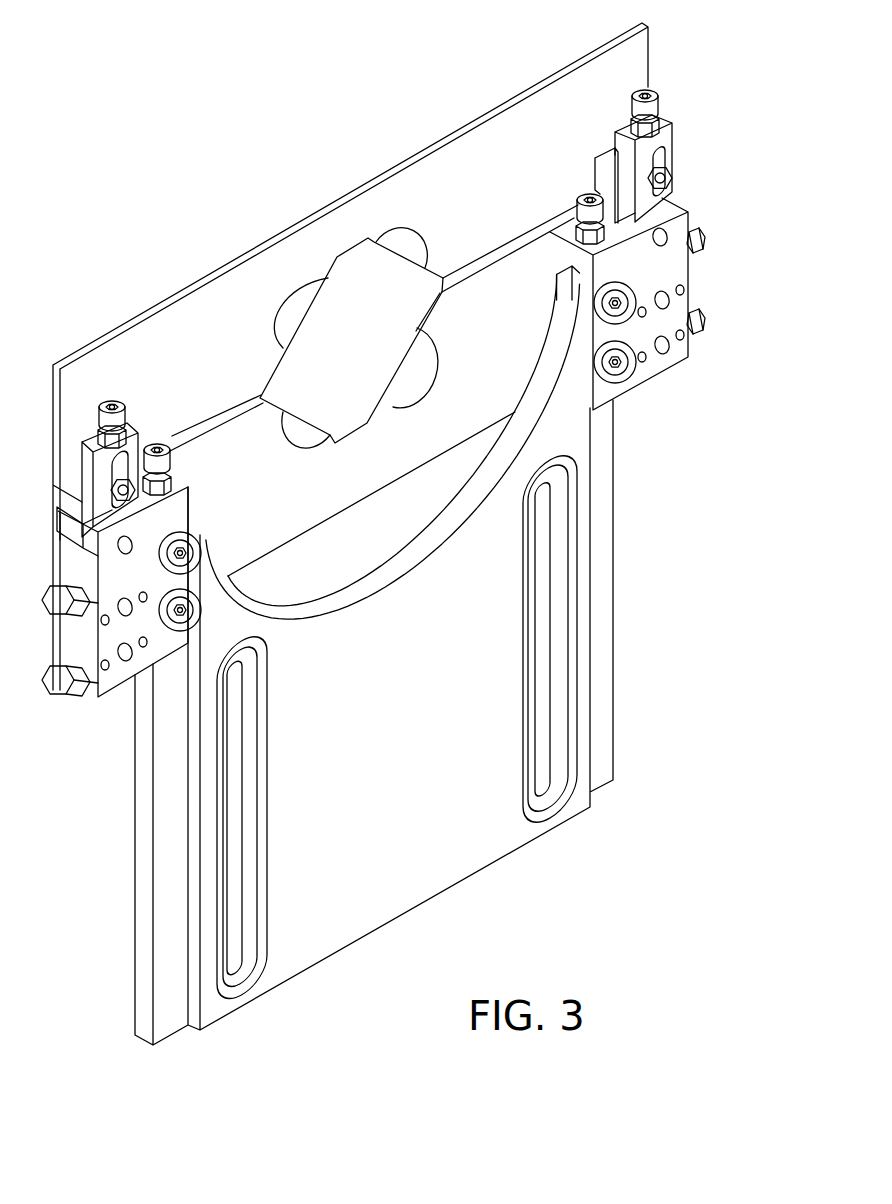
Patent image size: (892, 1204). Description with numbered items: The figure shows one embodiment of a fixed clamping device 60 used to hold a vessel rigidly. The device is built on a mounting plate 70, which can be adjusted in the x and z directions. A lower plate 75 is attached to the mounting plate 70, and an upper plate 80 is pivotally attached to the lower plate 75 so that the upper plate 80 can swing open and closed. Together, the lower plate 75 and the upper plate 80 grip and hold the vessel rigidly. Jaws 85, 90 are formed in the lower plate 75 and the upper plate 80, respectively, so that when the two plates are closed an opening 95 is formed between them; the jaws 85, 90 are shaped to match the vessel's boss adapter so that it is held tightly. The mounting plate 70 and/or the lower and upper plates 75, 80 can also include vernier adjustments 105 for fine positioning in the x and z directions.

The fixed clamping device 60 is at (149, 148).
The mounting plate 70 is at (430, 895).
The lower plate 75 is at (315, 528).
The upper plate 80 is at (425, 149).
The jaw 85 is at (348, 432).
The jaw 90 is at (356, 246).
The opening 95 is at (377, 351).
The vernier adjustments 105 is at (698, 238).